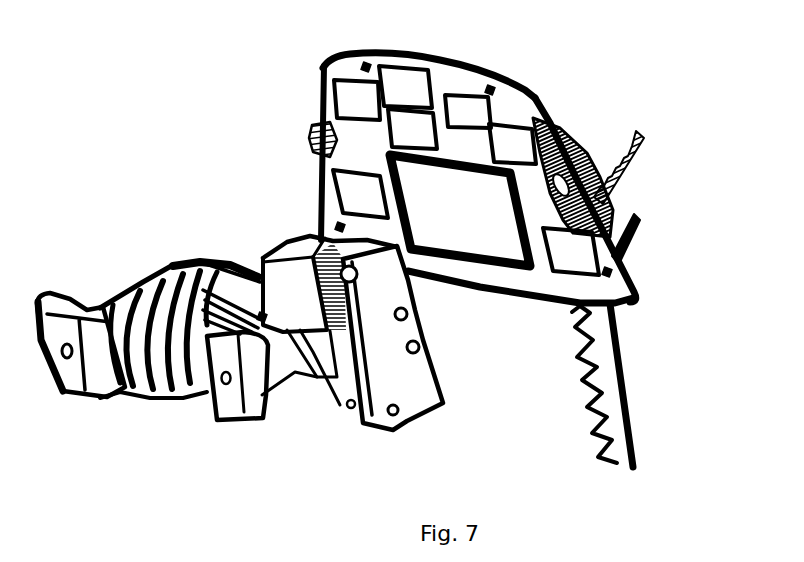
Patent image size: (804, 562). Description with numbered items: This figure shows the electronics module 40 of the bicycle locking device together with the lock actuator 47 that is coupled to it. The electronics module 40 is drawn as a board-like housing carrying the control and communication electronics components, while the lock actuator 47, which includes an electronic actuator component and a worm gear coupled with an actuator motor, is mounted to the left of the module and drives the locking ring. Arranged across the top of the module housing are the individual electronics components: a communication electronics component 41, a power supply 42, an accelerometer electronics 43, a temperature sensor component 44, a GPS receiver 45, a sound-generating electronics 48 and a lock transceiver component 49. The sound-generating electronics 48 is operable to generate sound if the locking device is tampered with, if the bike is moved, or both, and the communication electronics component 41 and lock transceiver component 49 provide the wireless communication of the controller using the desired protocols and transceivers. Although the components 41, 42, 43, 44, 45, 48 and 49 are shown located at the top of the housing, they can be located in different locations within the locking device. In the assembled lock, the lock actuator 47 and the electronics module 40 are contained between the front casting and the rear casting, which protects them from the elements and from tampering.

The electronics module 40 is at (176, 144).
The communication electronics component 41 is at (357, 100).
The power supply 42 is at (405, 87).
The accelerometer electronics 43 is at (412, 129).
The temperature sensor component 44 is at (468, 111).
The GPS receiver 45 is at (571, 251).
The lock actuator 47 is at (266, 258).
The sound-generating electronics 48 is at (512, 144).
The lock transceiver component 49 is at (360, 194).